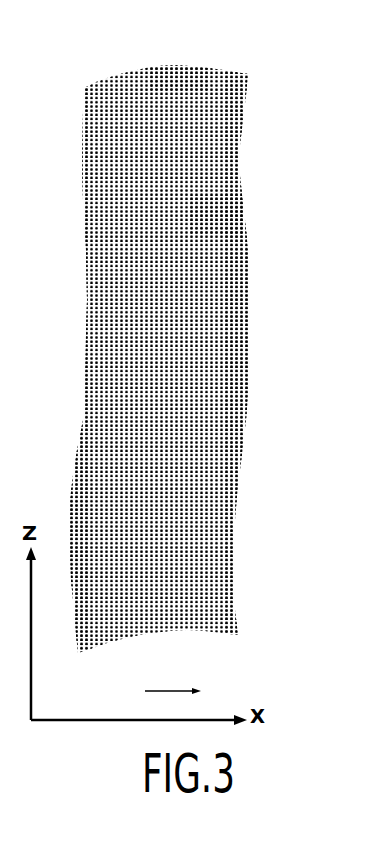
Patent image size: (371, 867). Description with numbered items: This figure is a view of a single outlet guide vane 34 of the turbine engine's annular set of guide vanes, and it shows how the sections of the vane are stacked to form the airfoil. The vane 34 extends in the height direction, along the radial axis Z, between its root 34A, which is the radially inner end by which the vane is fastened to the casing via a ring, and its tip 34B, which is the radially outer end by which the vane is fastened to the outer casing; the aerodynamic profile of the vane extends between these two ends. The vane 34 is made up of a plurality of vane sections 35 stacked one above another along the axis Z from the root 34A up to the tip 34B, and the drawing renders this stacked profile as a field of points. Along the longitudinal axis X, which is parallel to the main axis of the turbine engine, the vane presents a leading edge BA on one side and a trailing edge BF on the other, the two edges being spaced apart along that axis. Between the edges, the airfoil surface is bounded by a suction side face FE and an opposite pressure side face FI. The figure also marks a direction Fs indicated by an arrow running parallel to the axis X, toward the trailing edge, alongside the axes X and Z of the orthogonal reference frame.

The vane 34 is at (258, 377).
The root 34A is at (150, 634).
The tip 34B is at (139, 69).
The vane sections 35 is at (197, 160).
The leading edge BA is at (89, 366).
The trailing edge BF is at (248, 315).
The suction side face FE is at (177, 66).
The pressure side face FI is at (213, 213).
The force direction Fs is at (159, 691).